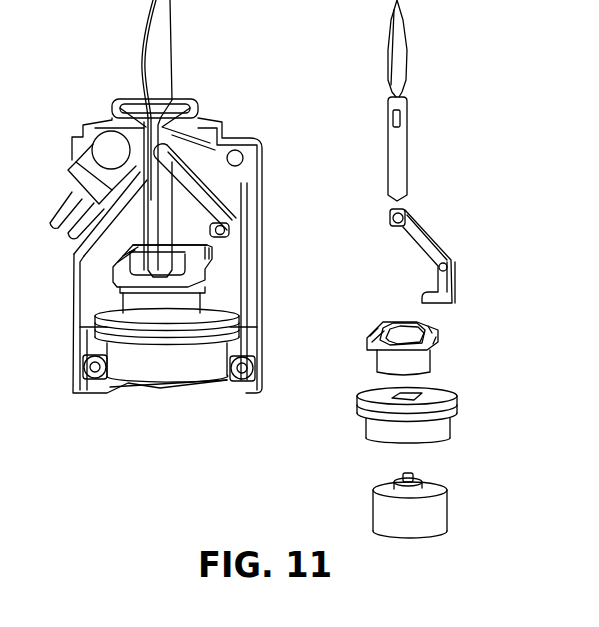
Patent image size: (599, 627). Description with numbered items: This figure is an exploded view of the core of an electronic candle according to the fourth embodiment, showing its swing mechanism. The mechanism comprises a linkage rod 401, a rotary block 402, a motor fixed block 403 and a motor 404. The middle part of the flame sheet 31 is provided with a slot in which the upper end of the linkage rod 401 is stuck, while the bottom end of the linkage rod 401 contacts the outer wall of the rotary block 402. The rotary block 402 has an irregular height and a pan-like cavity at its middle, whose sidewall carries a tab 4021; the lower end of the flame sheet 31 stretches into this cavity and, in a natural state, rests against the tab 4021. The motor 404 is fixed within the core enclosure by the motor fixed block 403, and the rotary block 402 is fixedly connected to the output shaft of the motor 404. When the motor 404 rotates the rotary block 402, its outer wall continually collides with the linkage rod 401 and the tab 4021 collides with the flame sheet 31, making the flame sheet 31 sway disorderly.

The flame sheet 31 is at (169, 217).
The linkage rod 401 is at (432, 265).
The rotary block 402 is at (208, 295).
The tab 4021 is at (409, 326).
The motor fixed block 403 is at (188, 358).
The motor 404 is at (179, 394).